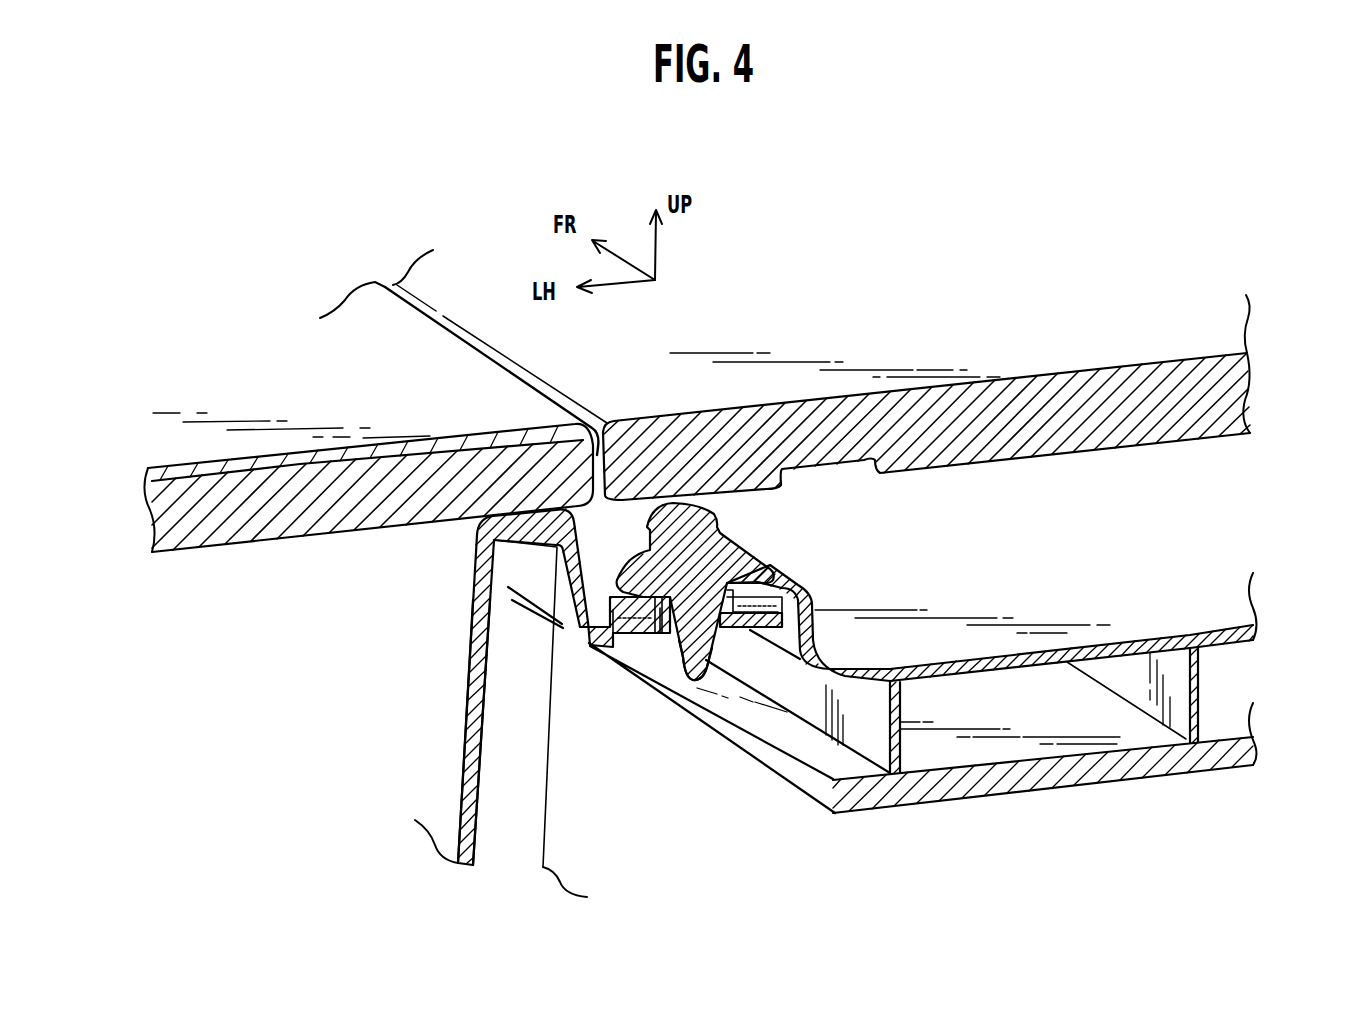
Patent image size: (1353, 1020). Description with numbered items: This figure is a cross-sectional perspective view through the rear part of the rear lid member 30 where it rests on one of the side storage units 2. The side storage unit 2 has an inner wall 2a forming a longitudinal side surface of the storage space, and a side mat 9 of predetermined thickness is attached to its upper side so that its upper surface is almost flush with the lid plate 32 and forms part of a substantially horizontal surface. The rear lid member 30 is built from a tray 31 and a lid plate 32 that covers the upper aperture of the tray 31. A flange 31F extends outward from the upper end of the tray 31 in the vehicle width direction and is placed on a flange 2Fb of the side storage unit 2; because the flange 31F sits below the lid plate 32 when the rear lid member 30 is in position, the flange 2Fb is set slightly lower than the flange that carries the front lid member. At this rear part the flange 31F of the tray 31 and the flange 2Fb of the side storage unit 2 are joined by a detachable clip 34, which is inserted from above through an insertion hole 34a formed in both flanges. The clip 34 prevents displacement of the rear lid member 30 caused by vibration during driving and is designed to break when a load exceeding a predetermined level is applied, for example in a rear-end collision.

The side storage unit 2 is at (540, 897).
The inner wall 2a is at (490, 733).
The flange of side storage unit 2Fb is at (722, 630).
The side mat 9 is at (253, 617).
The rear lid member 30 is at (1000, 145).
The tray 31 is at (1032, 713).
The flange of tray 31F is at (775, 565).
The lid plate 32 is at (1098, 390).
The detachable clip 34 is at (703, 547).
The insertion hole 34a is at (690, 668).